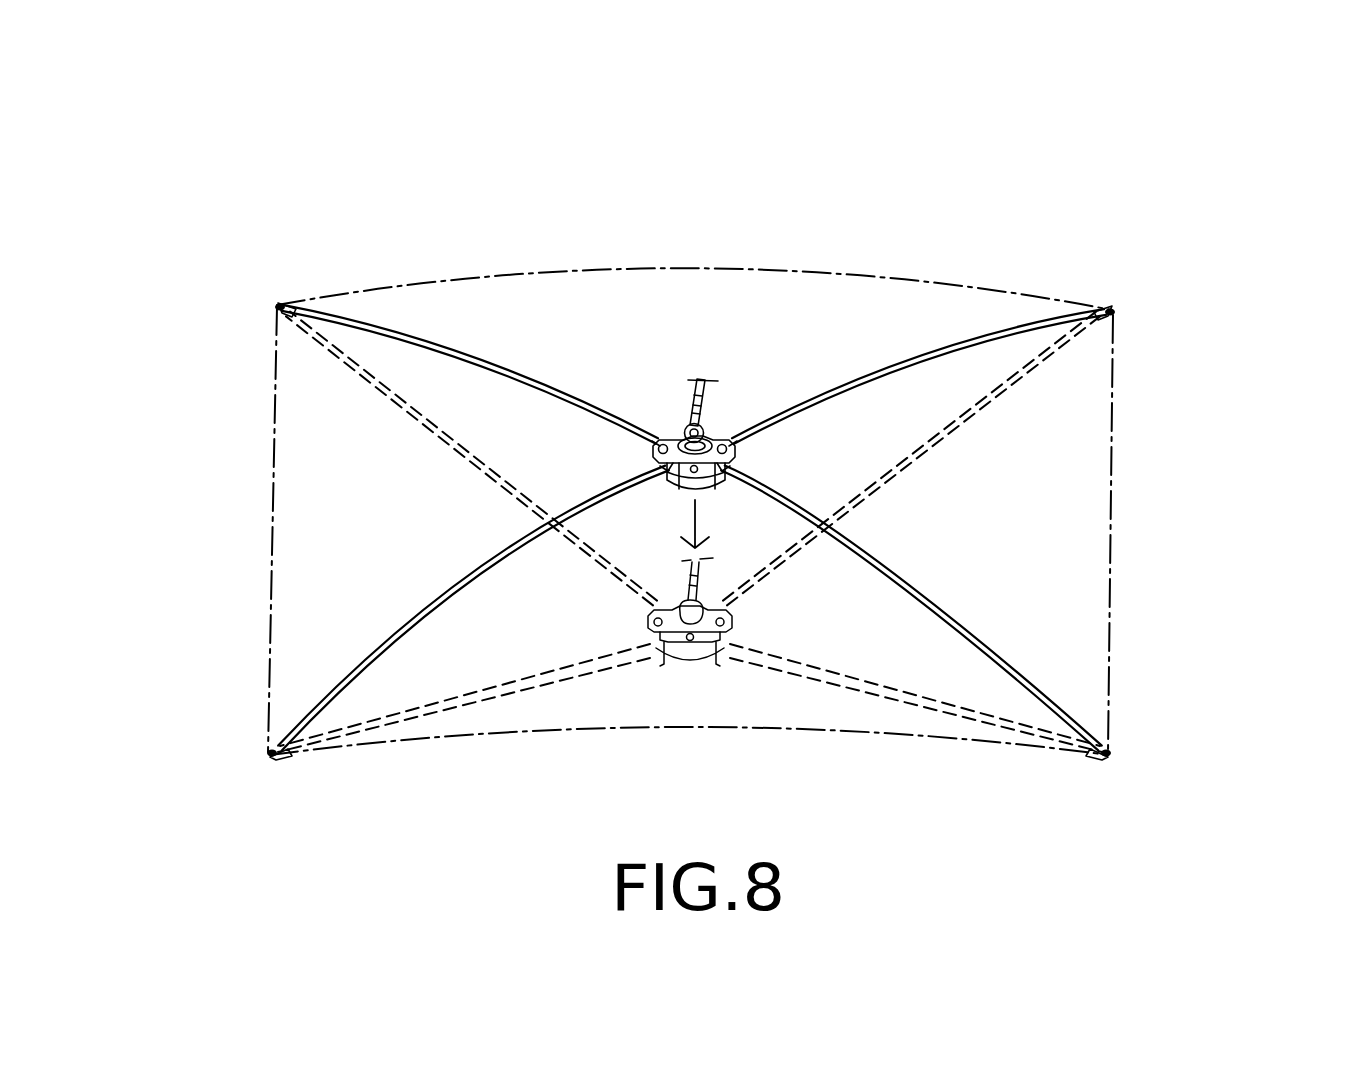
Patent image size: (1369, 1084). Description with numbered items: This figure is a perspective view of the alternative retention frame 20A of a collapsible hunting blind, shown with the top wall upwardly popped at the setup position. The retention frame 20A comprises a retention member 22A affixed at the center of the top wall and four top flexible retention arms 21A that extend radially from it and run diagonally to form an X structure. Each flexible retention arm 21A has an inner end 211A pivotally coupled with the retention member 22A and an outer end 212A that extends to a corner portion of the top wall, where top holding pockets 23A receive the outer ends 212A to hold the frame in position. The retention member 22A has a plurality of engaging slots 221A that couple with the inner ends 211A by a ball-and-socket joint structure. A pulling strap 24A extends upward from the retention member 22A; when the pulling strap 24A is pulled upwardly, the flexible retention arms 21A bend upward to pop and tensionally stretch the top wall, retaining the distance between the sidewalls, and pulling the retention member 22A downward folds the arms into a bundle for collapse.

The retention frame 20A is at (1220, 205).
The flexible retention arms 21A is at (530, 377).
The retention member 22A is at (715, 425).
The top holding pockets 23A is at (295, 302).
The pulling strap 24A is at (692, 385).
The inner end 211A is at (745, 468).
The outer end 212A is at (1093, 290).
The engaging slots 221A is at (640, 467).